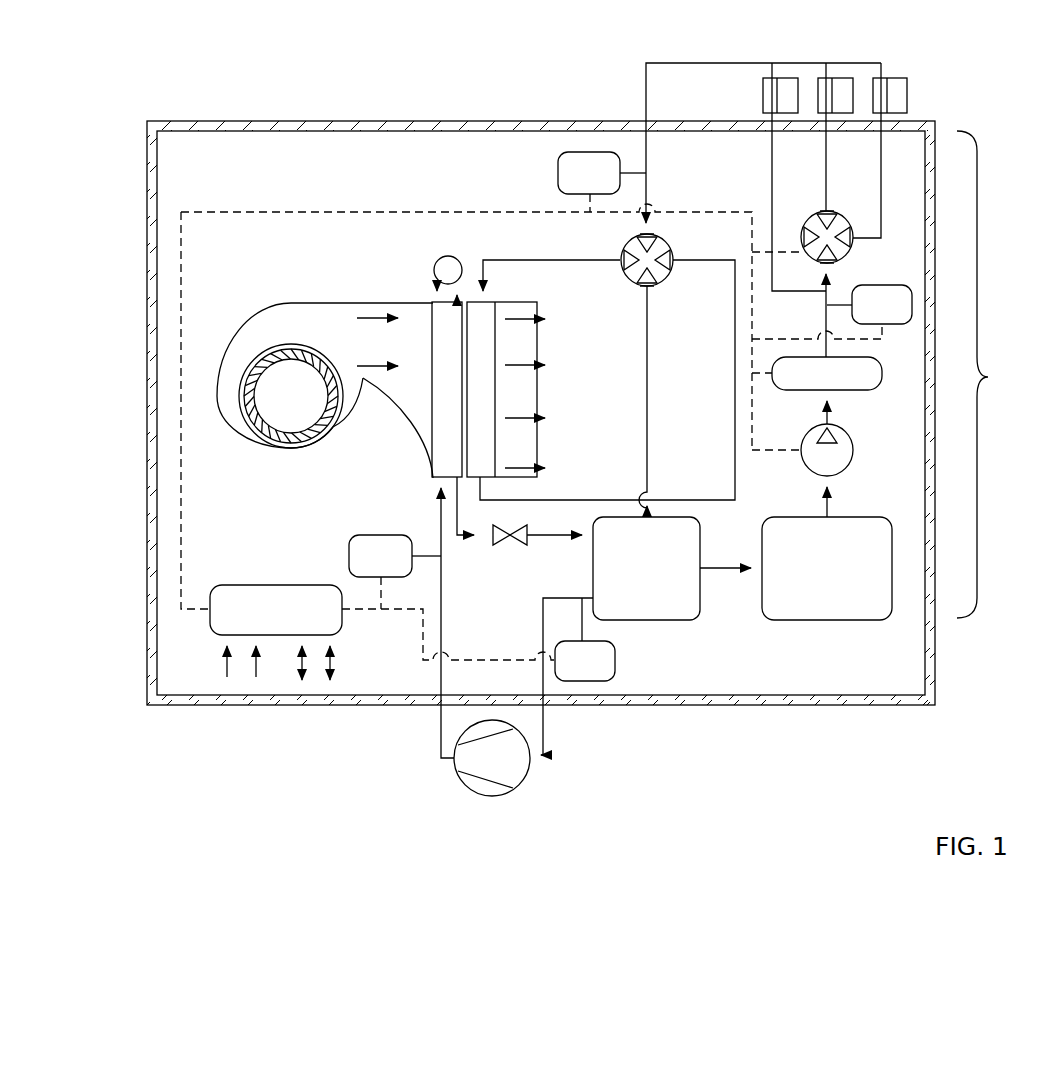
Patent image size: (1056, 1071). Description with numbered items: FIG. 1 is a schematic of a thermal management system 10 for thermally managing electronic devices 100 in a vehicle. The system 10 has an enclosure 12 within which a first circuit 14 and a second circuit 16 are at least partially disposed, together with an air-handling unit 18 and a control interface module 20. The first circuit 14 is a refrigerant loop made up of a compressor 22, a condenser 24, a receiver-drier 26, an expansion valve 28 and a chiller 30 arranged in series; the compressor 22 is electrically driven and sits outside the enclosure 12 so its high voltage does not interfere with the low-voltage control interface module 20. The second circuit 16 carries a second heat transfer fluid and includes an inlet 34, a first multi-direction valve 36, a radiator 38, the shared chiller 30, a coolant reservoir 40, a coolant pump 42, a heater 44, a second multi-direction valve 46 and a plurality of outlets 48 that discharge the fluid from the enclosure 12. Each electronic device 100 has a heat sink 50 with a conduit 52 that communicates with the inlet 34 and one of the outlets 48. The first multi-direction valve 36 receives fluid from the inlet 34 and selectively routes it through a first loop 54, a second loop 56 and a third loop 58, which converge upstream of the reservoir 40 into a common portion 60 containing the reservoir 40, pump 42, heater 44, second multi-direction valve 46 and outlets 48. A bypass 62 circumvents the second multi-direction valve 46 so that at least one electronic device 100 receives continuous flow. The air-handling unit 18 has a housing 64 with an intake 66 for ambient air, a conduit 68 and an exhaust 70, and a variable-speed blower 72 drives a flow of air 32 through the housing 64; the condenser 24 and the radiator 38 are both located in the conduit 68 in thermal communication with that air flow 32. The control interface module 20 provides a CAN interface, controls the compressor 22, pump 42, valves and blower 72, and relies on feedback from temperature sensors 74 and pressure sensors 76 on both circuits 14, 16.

The thermal management system 10 is at (236, 88).
The enclosure 12 is at (362, 121).
The first circuit 14 is at (430, 528).
The second circuit 16 is at (497, 255).
The air-handling unit 18 is at (320, 373).
The control interface module 20 is at (246, 585).
The compressor 22 is at (537, 762).
The condenser 24 is at (424, 444).
The receiver-drier 26 is at (444, 258).
The expansion valve 28 is at (512, 543).
The chiller 30 is at (613, 517).
The flow of air 32 is at (375, 318).
The inlet 34 is at (646, 125).
The first multi-direction valve 36 is at (665, 240).
The radiator 38 is at (487, 318).
The coolant reservoir 40 is at (820, 620).
The coolant pump 42 is at (853, 450).
The heater 44 is at (882, 373).
The second multi-direction valve 46 is at (850, 255).
The outlets 48 is at (772, 110).
The heat sink 50 is at (870, 97).
The conduit 52 is at (878, 88).
The first loop 54 is at (647, 398).
The second loop 56 is at (527, 262).
The third loop 58 is at (735, 340).
The common portion 60 is at (992, 374).
The bypass 62 is at (771, 168).
The housing 64 is at (250, 312).
The intake 66 is at (292, 428).
The conduit 68 is at (392, 335).
The exhaust 70 is at (522, 343).
The variable-speed blower 72 is at (245, 423).
The temperature sensors 74 is at (575, 152).
The pressure sensors 76 is at (349, 556).
The electronic devices 100 is at (958, 88).